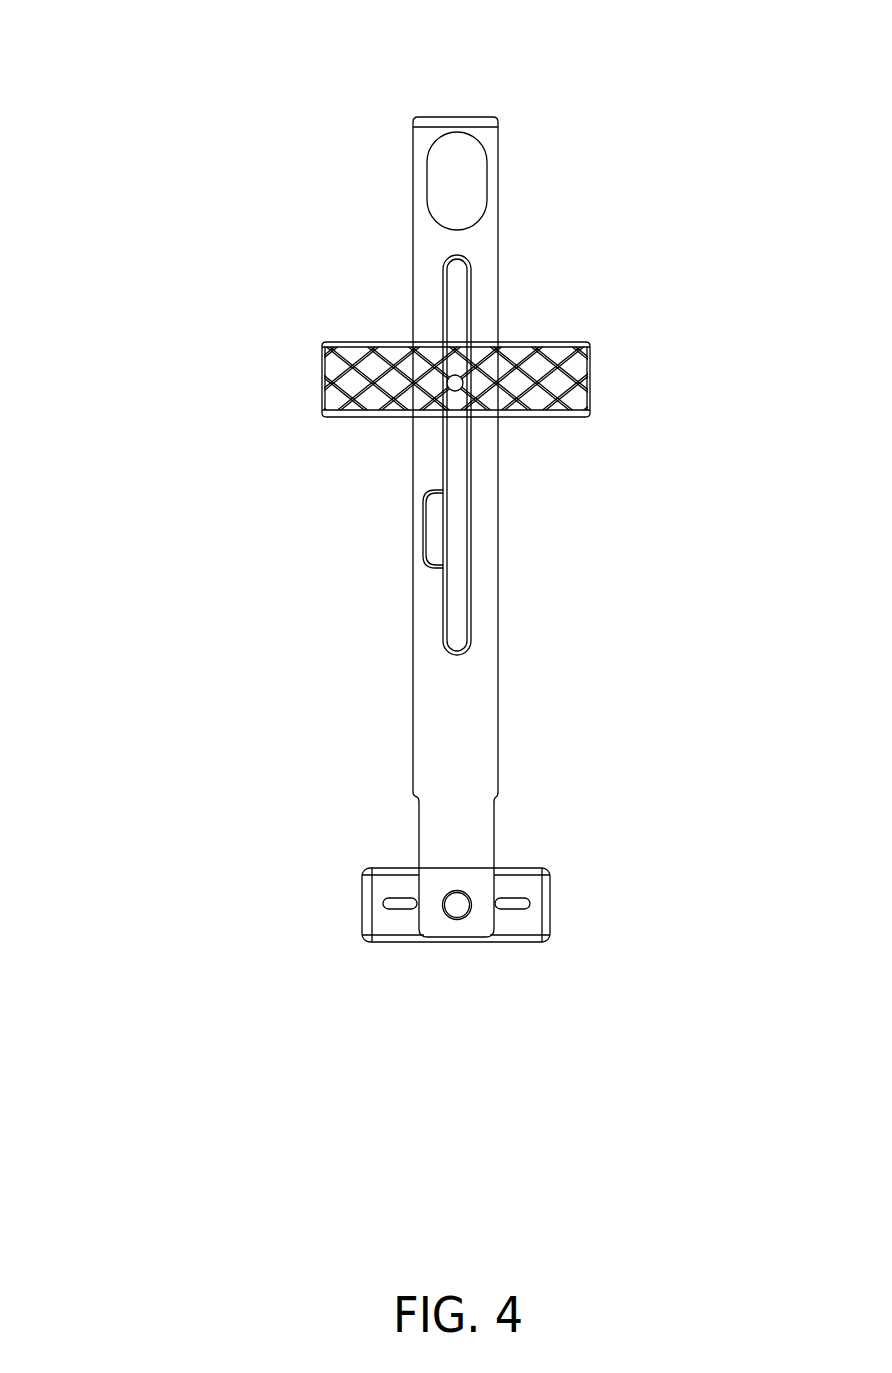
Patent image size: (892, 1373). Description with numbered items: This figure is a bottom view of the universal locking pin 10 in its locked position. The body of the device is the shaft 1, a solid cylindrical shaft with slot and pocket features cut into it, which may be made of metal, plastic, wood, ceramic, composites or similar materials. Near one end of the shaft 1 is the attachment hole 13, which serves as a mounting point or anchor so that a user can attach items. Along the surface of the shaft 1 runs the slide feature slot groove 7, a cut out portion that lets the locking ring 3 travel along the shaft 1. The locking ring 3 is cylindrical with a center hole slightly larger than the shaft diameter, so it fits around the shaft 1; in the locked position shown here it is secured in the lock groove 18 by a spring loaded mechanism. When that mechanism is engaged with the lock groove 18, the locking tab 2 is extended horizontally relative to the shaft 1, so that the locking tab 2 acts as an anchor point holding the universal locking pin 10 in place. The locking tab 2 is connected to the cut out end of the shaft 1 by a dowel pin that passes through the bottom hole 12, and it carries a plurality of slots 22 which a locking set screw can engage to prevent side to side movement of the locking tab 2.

The universal locking pin 10 is at (188, 104).
The shaft 1 is at (406, 113).
The attachment hole 13 is at (485, 176).
The slide feature slot groove 7 is at (475, 610).
The locking ring 3 is at (306, 383).
The lock groove 18 is at (414, 532).
The locking tab 2 is at (378, 952).
The slots 22 is at (388, 893).
The bottom hole 12 is at (475, 918).